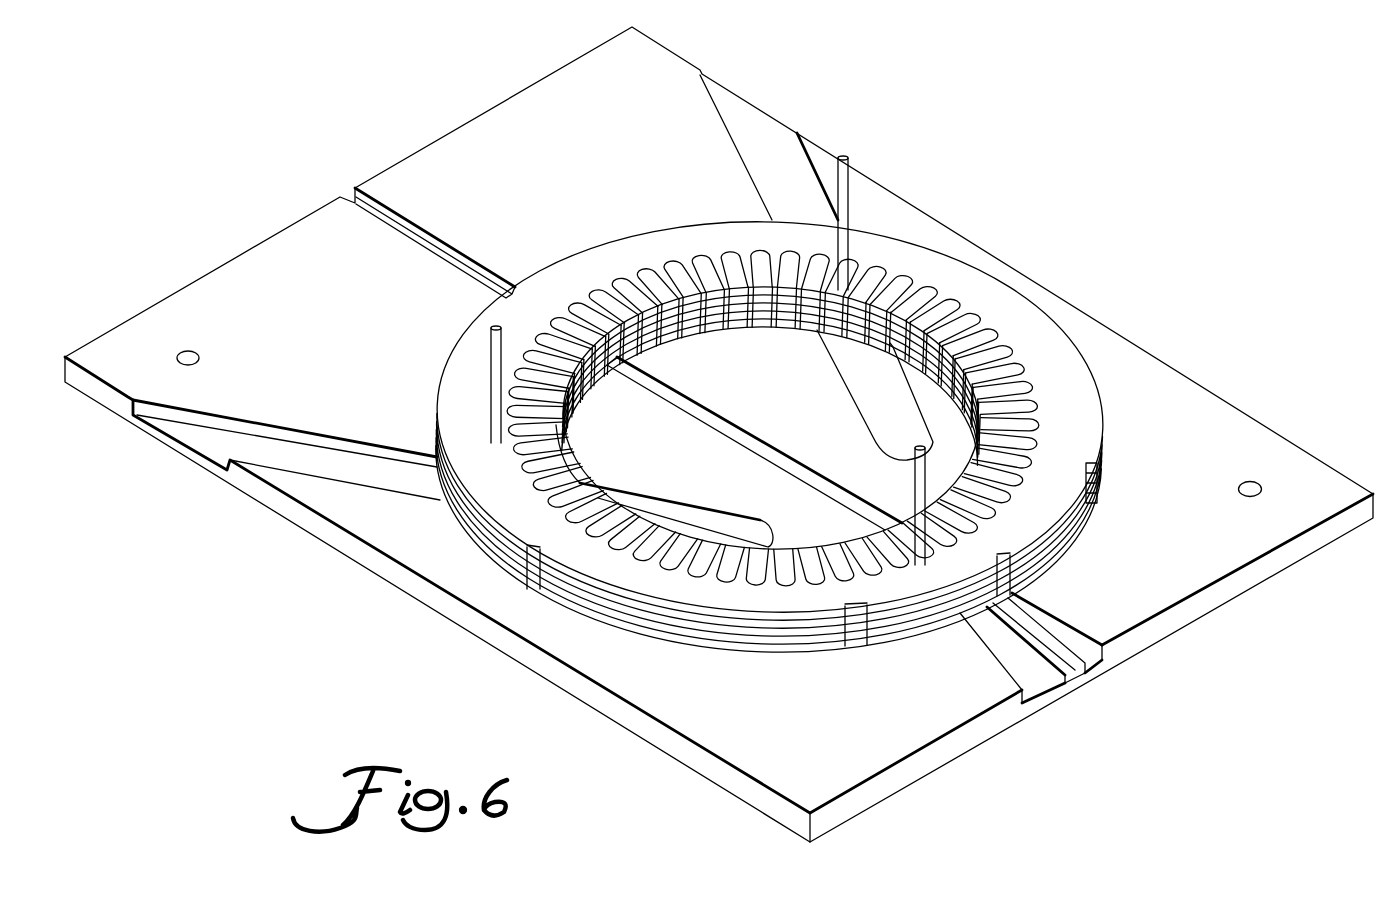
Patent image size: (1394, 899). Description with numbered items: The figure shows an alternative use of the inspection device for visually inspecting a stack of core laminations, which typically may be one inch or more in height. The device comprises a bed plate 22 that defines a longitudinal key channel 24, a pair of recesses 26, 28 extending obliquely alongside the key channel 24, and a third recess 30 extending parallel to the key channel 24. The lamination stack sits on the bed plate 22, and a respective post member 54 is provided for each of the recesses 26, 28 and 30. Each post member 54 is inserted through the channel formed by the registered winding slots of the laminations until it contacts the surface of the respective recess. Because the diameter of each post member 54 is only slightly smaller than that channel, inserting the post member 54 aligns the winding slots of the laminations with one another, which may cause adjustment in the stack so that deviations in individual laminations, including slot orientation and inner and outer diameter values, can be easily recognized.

The bed plate 22 is at (1225, 417).
The key channel 24 is at (1055, 625).
The recess 26 is at (338, 455).
The recess 28 is at (762, 138).
The third recess 30 is at (1037, 678).
The post member 54 is at (848, 178).